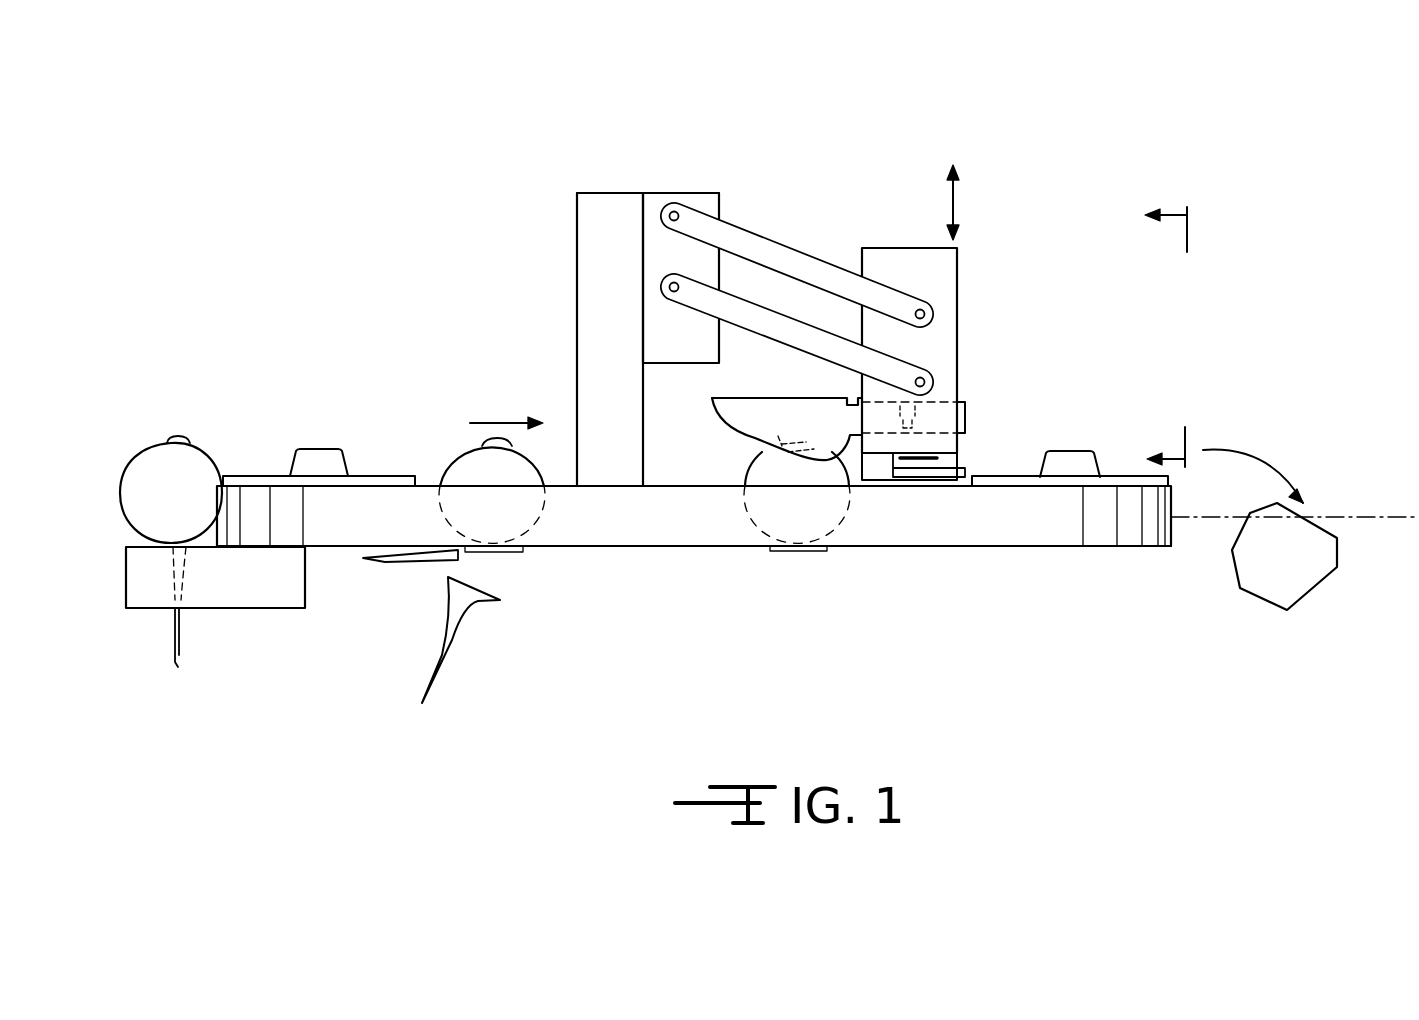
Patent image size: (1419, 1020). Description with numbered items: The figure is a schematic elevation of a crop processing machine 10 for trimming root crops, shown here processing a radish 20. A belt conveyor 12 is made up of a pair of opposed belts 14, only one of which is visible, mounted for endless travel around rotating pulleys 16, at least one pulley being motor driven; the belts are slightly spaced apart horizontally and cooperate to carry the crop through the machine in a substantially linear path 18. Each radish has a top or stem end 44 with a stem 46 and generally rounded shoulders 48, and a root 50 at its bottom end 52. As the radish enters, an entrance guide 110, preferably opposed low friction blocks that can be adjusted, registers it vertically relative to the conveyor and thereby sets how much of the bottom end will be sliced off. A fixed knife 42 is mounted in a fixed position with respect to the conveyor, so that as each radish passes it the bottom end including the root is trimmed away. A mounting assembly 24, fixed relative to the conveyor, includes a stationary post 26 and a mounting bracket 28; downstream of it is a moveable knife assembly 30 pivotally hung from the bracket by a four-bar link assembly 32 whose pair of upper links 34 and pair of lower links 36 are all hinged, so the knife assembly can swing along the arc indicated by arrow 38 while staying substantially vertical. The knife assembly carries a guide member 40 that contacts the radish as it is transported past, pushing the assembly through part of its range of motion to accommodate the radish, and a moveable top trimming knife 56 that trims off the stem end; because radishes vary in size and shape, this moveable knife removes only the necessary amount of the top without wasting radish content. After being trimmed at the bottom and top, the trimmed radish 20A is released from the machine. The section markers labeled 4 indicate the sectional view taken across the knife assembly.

The crop processing machine 10 is at (1047, 318).
The belt conveyor 12 is at (987, 552).
The opposed belts 14 is at (883, 548).
The rotating pulleys 16 is at (368, 474).
The linear path 18 is at (1358, 517).
The radish 20 is at (160, 402).
The trimmed radish 20A is at (1325, 590).
The mounting assembly 24 is at (622, 143).
The stationary post 26 is at (577, 247).
The mounting bracket 28 is at (695, 193).
The knife assembly 30 is at (962, 280).
The 4-bar link assembly 32 is at (797, 262).
The upper links 34 is at (787, 245).
The lower links 36 is at (795, 352).
The arrow 38 is at (953, 202).
The guide member 40 is at (742, 430).
The fixed knife 42 is at (403, 562).
The stem end 44 is at (153, 443).
The stem 46 is at (177, 435).
The shoulders 48 is at (218, 465).
The root 50 is at (170, 638).
The bottom end 52 is at (127, 518).
The top trimming knife 56 is at (933, 458).
The entrance guide 110 is at (126, 567).
The section line 4- 4 is at (1174, 342).